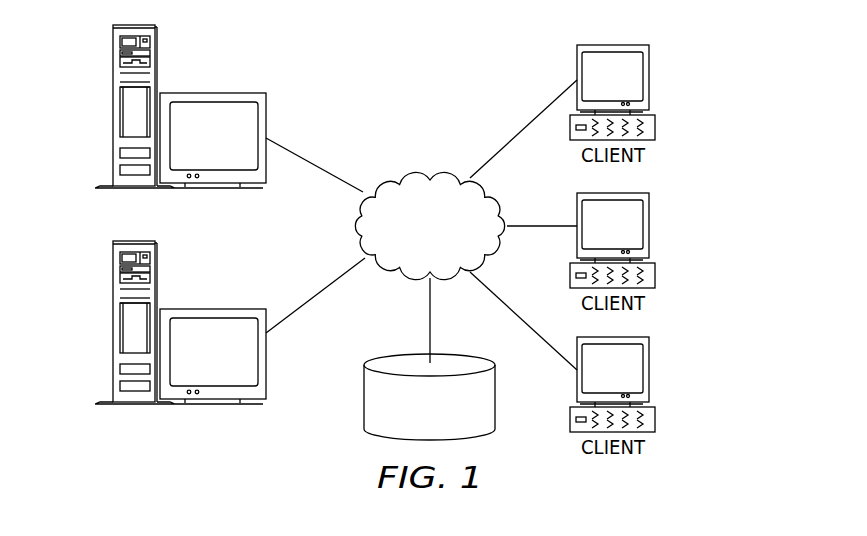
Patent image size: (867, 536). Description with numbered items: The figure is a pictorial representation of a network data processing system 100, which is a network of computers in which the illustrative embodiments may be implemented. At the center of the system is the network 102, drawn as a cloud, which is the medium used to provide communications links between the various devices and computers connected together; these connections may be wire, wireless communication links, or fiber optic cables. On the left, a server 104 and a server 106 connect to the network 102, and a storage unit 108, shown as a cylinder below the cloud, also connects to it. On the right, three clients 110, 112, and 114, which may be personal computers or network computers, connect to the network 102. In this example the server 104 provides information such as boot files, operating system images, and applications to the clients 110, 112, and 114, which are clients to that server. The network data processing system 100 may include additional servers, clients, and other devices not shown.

The network data processing system 100 is at (480, 68).
The network 102 is at (424, 172).
The server 104 is at (113, 110).
The server 106 is at (113, 328).
The storage unit 108 is at (364, 410).
The client 110 is at (649, 77).
The client 112 is at (649, 225).
The client 114 is at (649, 368).